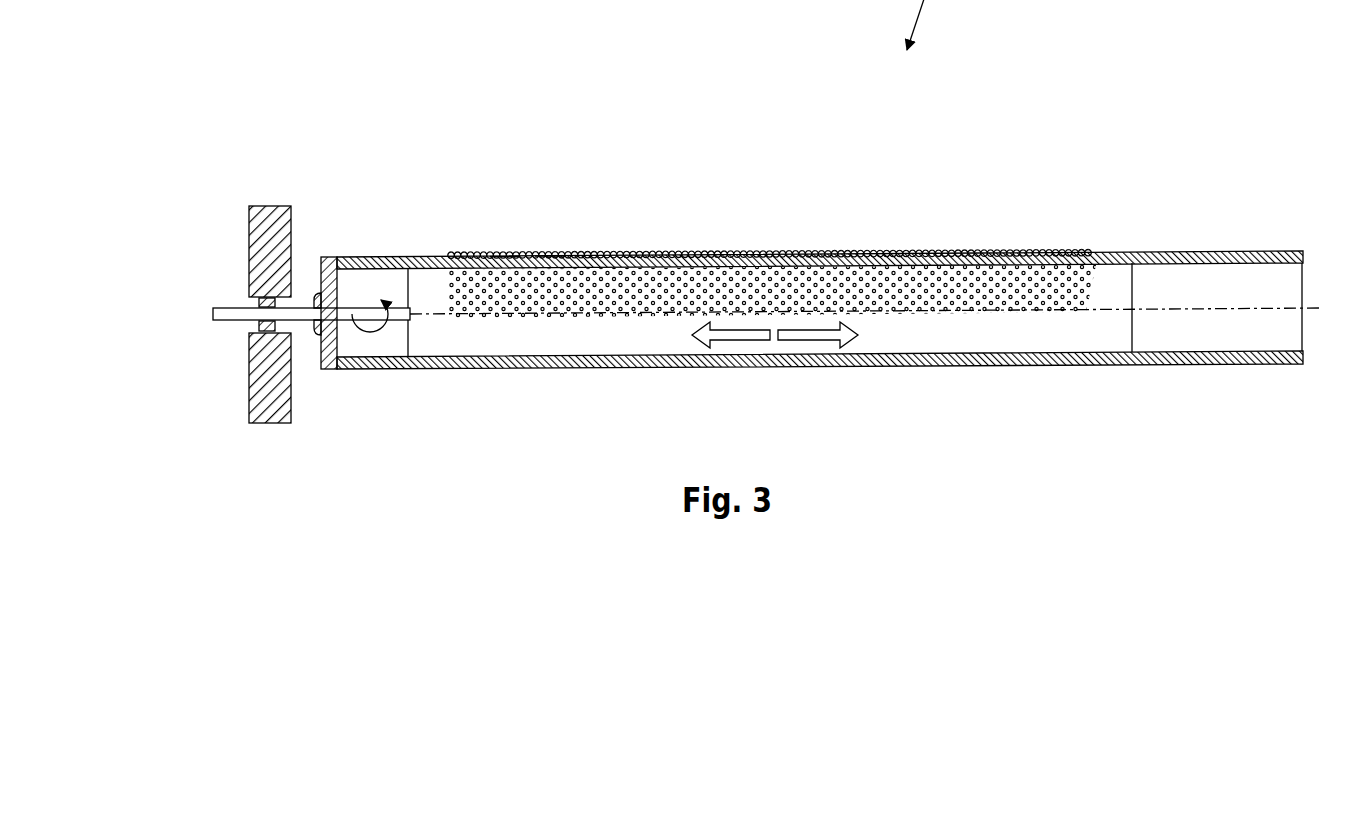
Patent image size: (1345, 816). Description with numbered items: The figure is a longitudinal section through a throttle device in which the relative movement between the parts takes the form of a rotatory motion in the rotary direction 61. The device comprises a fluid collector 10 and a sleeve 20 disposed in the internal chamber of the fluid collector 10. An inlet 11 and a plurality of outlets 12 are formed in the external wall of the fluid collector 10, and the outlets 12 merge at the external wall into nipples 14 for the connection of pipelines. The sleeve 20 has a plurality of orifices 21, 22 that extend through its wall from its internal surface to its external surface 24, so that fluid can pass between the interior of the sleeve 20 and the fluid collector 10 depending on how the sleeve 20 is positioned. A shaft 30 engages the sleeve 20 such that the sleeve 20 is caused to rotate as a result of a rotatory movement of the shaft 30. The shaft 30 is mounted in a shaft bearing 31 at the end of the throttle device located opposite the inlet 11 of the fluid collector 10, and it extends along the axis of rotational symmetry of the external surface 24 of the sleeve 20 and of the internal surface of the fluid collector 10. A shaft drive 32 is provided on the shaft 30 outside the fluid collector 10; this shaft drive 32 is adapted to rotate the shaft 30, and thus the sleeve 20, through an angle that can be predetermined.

The fluid collector 10 is at (1188, 251).
The inlet 11 is at (1298, 290).
The outlets 12 is at (941, 237).
The nipples 14 is at (703, 248).
The sleeve 20 is at (1060, 267).
The orifice 21 is at (503, 251).
The orifice 22 is at (548, 251).
The external surface 24 is at (1090, 222).
The shaft 30 is at (219, 306).
The shaft bearing 31 is at (320, 293).
The shaft drive 32 is at (250, 207).
The rotary direction 61 is at (378, 336).